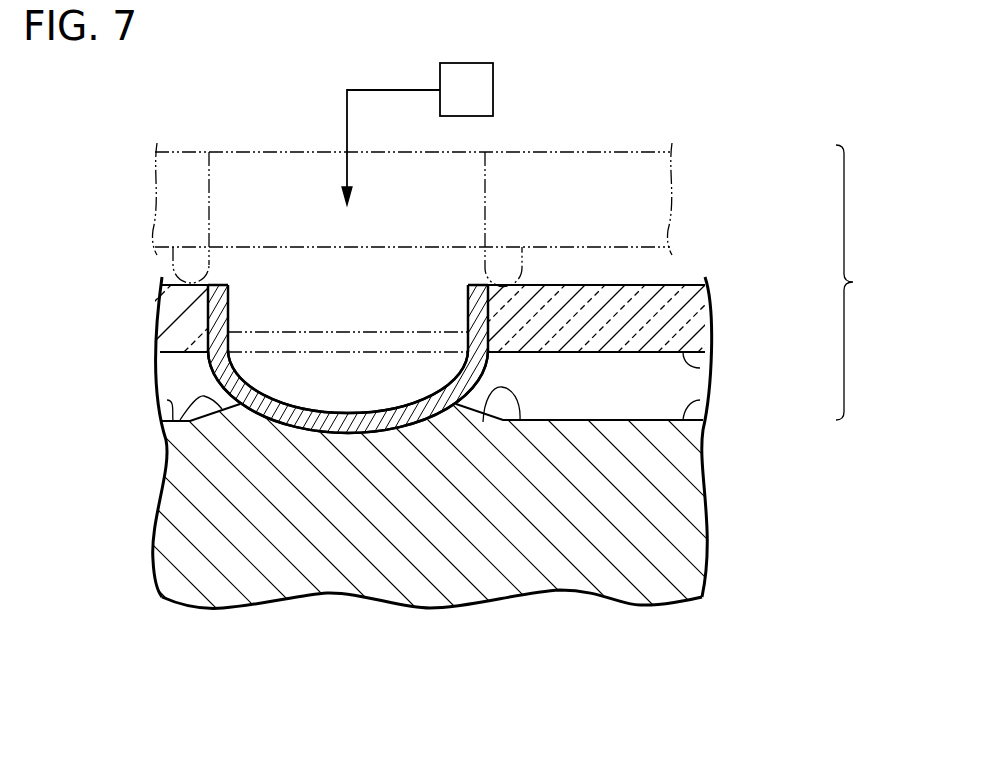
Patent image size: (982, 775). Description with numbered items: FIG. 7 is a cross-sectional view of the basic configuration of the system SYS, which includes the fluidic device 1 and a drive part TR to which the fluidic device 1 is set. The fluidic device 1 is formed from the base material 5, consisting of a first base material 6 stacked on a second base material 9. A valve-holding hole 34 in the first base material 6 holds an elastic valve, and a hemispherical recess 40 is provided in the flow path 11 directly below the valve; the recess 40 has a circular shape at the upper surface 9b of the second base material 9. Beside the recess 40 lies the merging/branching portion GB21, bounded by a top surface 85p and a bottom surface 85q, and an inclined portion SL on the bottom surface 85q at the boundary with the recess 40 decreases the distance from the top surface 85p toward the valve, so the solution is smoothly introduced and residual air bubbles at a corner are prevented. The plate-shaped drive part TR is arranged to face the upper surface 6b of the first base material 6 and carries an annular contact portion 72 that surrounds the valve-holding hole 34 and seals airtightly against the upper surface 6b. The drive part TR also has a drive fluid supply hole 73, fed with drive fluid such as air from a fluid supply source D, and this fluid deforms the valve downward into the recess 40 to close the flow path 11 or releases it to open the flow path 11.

The fluidic device 1 is at (762, 501).
The base material 5 is at (688, 277).
The first base material 6 is at (692, 312).
The upper surface of the first base material 6b is at (700, 283).
The second base material 9 is at (670, 473).
The upper surface of the second base material 9b is at (175, 348).
The flow path 11 is at (170, 378).
The valve-holding hole 34 is at (230, 310).
The recess 40 is at (306, 424).
The contact portion 72 is at (515, 265).
The drive fluid supply hole 73 is at (213, 202).
The top surface 85p is at (700, 368).
The bottom surface 85q is at (167, 400).
The fluid supply source D is at (470, 63).
The drive part TR is at (625, 152).
The inclined portion SL is at (520, 420).
The merging/branching portion GB21 is at (622, 401).
The system SYS is at (868, 282).